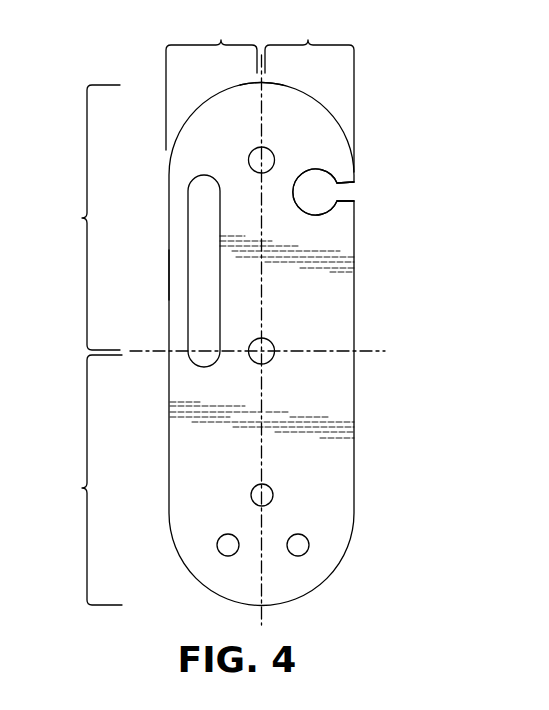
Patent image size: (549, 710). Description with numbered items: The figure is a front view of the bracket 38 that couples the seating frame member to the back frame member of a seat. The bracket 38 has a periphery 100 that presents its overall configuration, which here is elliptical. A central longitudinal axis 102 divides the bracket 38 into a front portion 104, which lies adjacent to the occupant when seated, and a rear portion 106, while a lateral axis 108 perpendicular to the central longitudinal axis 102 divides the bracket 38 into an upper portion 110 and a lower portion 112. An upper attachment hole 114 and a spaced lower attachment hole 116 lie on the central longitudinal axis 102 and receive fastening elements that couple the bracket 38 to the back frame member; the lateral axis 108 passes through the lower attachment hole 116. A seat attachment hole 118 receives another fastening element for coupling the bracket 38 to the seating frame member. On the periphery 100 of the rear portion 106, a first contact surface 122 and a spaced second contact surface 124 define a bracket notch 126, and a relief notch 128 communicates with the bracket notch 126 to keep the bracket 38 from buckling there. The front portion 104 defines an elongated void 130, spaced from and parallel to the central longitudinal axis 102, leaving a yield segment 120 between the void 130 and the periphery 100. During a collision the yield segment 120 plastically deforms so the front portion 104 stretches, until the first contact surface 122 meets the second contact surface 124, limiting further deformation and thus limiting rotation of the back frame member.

The bracket 38 is at (150, 513).
The periphery 100 is at (268, 83).
The central longitudinal axis 102 is at (257, 118).
The front portion 104 is at (211, 81).
The rear portion 106 is at (381, 294).
The lateral axis 108 is at (365, 352).
The upper portion 110 is at (76, 217).
The lower portion 112 is at (78, 480).
The upper attachment hole 114 is at (274, 161).
The lower attachment hole 116 is at (272, 343).
The seat attachment hole 118 is at (239, 547).
The yield segment 120 is at (168, 272).
The first contact surface 122 is at (350, 181).
The second contact surface 124 is at (352, 203).
The bracket notch 126 is at (348, 192).
The relief notch 128 is at (297, 185).
The void 130 is at (194, 222).